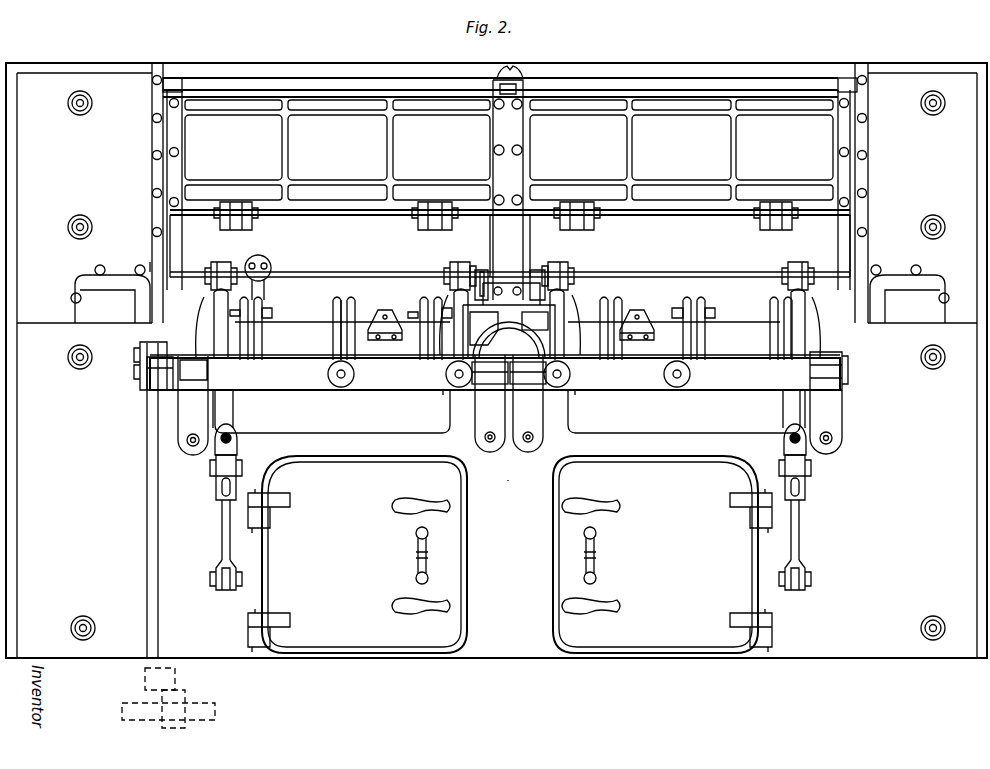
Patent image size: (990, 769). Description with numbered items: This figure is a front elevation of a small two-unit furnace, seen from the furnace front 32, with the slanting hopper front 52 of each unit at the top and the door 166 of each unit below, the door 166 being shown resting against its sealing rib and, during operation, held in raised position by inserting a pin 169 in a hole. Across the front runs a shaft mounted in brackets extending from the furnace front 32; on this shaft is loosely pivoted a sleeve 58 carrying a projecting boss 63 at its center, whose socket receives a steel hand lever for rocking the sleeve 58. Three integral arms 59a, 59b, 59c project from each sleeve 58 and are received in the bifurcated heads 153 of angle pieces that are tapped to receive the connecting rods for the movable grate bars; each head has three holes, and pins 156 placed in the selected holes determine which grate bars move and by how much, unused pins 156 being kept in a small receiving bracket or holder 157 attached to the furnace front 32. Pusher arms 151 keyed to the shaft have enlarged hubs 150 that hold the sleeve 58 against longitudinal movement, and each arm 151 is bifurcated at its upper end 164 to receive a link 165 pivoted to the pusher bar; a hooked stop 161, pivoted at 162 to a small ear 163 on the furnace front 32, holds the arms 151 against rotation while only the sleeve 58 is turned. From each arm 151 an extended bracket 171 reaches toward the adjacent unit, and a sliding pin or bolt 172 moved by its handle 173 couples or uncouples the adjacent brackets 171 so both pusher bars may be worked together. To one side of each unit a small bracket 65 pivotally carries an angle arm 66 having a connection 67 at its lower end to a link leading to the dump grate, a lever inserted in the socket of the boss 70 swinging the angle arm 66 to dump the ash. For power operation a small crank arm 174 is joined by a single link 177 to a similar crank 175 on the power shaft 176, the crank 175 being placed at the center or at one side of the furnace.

The furnace front 32 is at (497, 483).
The slanting hopper front 52 is at (509, 150).
The sleeve 58 is at (400, 392).
The arm 59a is at (418, 312).
The arm 59b is at (344, 321).
The arm 59c is at (250, 262).
The boss 63 is at (341, 388).
The bracket 65 is at (240, 444).
The angle arm 66 is at (221, 522).
The connection 67 is at (214, 590).
The boss 70 is at (216, 489).
The enlarged hubs 150 is at (238, 394).
The arms 151 is at (214, 312).
The bifurcated heads 153 is at (264, 310).
The pins 156 is at (274, 313).
The receiving bracket or holder 157 is at (388, 341).
The hooked stop 161 is at (474, 264).
The pivot 162 is at (462, 292).
The ear 163 is at (483, 280).
The bifurcated upper end 164 is at (214, 302).
The link 165 is at (222, 266).
The door 166 is at (510, 246).
The pin 169 is at (170, 240).
The extended bracket 171 is at (509, 340).
The sliding pin or bolt 172 is at (482, 327).
The handle 173 is at (538, 326).
The crank arm 174 is at (190, 344).
The crank 175 is at (176, 684).
The power shaft 176 is at (208, 708).
The link 177 is at (147, 520).